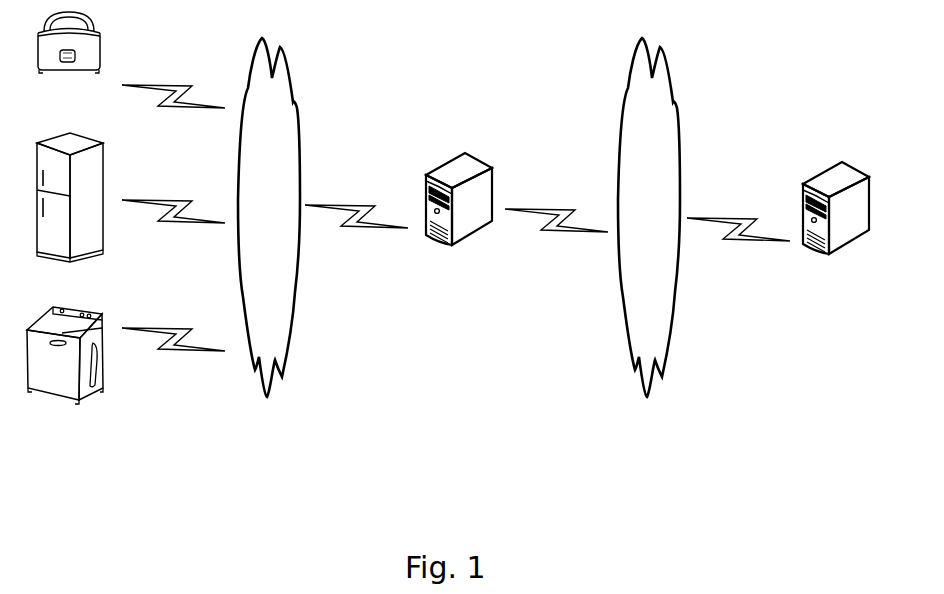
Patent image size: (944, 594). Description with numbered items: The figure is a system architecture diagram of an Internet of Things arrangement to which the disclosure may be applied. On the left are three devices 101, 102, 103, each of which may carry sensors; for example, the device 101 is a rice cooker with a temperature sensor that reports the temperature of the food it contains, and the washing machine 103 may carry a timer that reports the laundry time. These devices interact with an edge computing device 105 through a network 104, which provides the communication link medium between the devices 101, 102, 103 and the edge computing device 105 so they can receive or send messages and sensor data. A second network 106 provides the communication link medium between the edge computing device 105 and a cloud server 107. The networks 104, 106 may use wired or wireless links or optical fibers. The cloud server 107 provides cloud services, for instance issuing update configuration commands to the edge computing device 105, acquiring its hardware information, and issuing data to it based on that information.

The device 101 is at (69, 54).
The device 102 is at (70, 208).
The washing machine 103 is at (65, 367).
The network 104 is at (265, 217).
The edge computing device 105 is at (517, 220).
The network 106 is at (704, 217).
The cloud server 107 is at (836, 224).